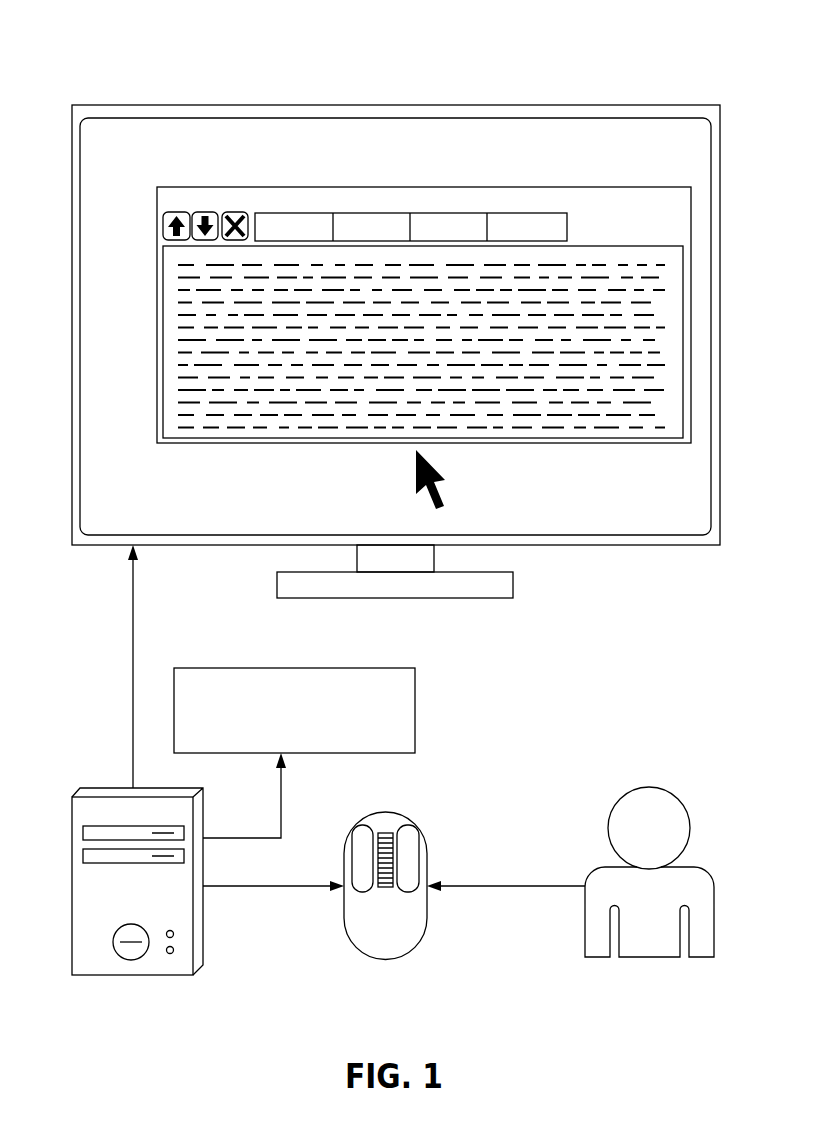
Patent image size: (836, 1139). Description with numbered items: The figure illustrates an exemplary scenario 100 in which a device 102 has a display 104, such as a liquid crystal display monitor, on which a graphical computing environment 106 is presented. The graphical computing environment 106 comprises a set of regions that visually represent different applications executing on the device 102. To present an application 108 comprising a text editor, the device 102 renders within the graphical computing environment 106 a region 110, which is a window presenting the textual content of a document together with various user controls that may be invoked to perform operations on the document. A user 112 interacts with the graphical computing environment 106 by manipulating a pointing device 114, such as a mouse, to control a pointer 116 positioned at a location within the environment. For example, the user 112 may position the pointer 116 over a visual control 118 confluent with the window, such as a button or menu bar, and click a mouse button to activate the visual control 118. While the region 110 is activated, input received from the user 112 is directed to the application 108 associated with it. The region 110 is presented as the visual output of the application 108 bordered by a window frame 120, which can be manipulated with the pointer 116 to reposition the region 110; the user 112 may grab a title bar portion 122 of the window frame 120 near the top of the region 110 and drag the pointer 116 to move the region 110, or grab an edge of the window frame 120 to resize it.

The exemplary scenario 100 is at (133, 50).
The device 102 is at (110, 788).
The display 104 is at (128, 105).
The graphical computing environment 106 is at (215, 118).
The application 108 is at (233, 668).
The region 110 is at (210, 188).
The user 112 is at (650, 787).
The pointing device 114 is at (385, 812).
The pointer 116 is at (435, 464).
The visual control 118 is at (162, 224).
The window frame 120 is at (298, 188).
The title bar portion 122 is at (388, 192).